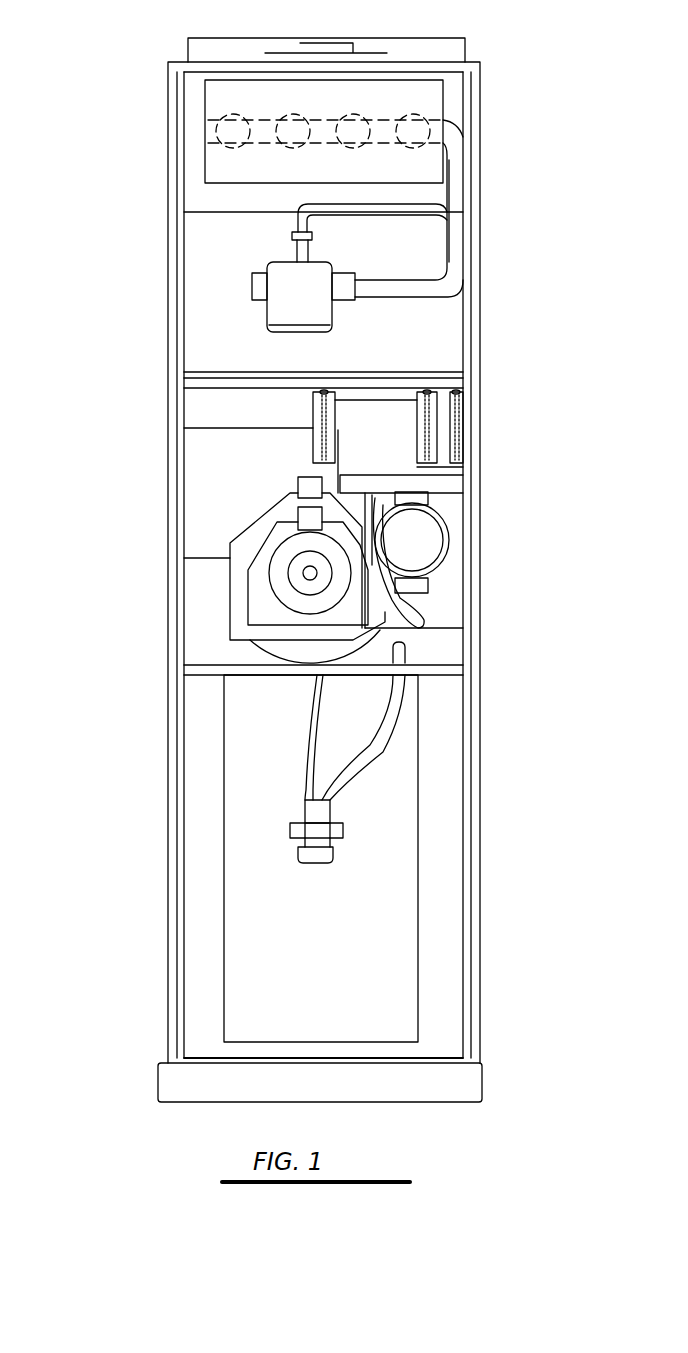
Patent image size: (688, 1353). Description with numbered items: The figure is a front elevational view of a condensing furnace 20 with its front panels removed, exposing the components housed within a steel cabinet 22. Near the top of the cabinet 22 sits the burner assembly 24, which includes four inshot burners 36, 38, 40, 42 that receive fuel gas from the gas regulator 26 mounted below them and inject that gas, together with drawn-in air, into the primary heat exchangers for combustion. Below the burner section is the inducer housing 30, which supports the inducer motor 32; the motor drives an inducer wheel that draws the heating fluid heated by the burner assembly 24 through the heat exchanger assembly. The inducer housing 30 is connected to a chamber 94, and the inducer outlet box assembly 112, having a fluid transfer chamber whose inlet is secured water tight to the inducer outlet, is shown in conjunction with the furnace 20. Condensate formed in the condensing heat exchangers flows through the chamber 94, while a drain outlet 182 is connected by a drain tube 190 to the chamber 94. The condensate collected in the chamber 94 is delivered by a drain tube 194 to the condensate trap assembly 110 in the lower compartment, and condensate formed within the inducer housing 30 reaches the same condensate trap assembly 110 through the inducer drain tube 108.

The condensing furnace 20 is at (155, 203).
The steel cabinet 22 is at (168, 318).
The burner assembly 24 is at (427, 100).
The gas regulator 26 is at (335, 323).
The inducer housing 30 is at (350, 498).
The inducer motor 32 is at (293, 580).
The inshot burner 36 is at (233, 116).
The inshot burner 38 is at (293, 116).
The inshot burner 40 is at (353, 116).
The inshot burner 42 is at (413, 116).
The chamber 94 is at (447, 647).
The inducer drain tube 108 is at (310, 723).
The condensate trap assembly 110 is at (330, 863).
The inducer outlet box assembly 112 is at (312, 445).
The drain outlet 182 is at (375, 502).
The drain tube 190 is at (397, 607).
The drain tube 194 is at (337, 767).